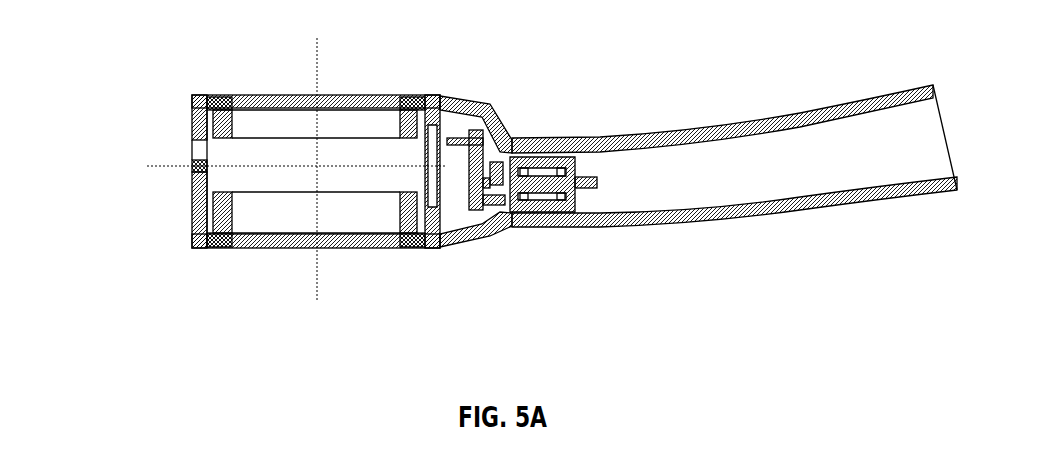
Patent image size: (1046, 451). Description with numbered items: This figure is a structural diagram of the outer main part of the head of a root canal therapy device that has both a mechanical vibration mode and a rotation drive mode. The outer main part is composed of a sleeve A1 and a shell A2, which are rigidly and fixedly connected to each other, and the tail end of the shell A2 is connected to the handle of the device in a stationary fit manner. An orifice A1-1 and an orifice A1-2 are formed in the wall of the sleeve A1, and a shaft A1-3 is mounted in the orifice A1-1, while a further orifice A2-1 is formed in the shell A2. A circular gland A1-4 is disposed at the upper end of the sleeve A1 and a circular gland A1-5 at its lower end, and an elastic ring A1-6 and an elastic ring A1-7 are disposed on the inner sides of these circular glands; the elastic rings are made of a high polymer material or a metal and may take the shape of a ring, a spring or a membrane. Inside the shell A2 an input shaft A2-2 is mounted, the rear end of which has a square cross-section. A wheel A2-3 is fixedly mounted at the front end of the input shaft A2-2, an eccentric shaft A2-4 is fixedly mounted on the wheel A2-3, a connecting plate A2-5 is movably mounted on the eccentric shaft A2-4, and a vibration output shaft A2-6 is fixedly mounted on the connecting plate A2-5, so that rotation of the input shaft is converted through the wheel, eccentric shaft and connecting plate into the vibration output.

The sleeve A1 is at (195, 123).
The orifice A1-1 is at (196, 184).
The orifice A1-2 is at (433, 155).
The shaft A1-3 is at (195, 165).
The circular gland A1-4 is at (305, 100).
The circular gland A1-5 is at (222, 240).
The elastic ring A1-6 is at (222, 127).
The elastic ring A1-7 is at (330, 218).
The shell A2 is at (667, 142).
The orifice A2-1 is at (457, 110).
The input shaft A2-2 is at (558, 183).
The wheel A2-3 is at (497, 172).
The eccentric shaft A2-4 is at (495, 200).
The connecting plate A2-5 is at (475, 178).
The vibration output shaft A2-6 is at (459, 142).